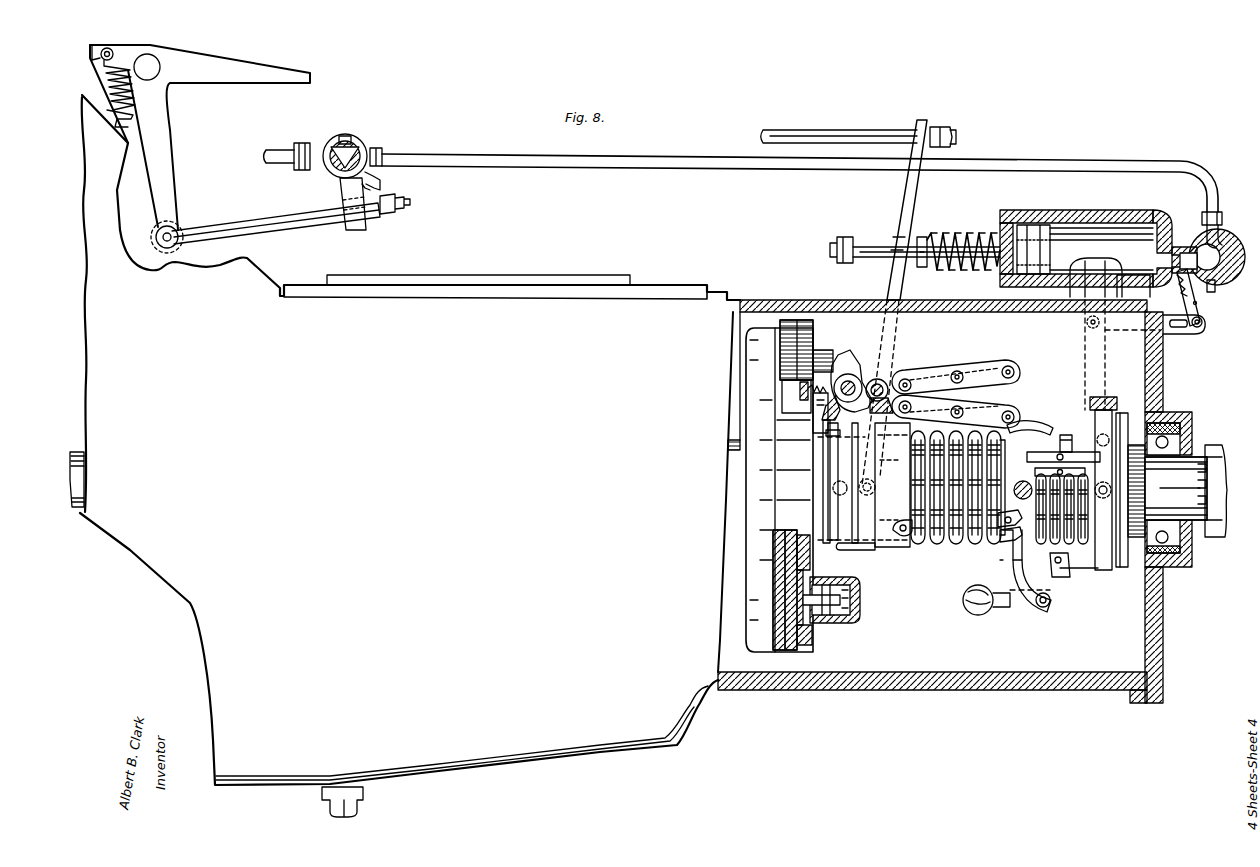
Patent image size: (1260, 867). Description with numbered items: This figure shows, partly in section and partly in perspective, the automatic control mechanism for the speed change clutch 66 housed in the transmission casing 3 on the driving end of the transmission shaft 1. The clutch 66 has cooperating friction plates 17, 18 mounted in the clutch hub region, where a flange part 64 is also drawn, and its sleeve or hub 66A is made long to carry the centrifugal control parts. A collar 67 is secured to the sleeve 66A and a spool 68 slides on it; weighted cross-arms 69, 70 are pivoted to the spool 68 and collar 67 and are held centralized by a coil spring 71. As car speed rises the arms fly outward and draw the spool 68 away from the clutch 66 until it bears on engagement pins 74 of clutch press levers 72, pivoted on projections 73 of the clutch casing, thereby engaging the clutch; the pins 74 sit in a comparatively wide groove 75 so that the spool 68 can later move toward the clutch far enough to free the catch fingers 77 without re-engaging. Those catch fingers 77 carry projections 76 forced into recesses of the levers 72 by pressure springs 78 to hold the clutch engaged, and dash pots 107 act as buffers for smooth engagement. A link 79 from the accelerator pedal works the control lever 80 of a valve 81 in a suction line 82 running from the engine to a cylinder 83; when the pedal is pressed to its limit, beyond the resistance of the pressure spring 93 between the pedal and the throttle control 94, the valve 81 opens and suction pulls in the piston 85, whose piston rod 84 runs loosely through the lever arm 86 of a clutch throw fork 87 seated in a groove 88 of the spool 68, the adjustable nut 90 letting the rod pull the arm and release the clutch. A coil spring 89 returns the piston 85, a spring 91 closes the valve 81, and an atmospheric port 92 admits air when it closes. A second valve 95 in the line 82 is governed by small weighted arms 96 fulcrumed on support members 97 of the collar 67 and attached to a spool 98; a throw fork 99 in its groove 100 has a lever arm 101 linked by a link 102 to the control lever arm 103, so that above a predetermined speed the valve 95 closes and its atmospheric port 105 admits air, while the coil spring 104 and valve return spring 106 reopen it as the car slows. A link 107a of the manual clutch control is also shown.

The transmission shaft 1 is at (78, 450).
The transmission casing 3 is at (398, 778).
The friction plate 17 is at (775, 640).
The friction plate 18 is at (792, 645).
The hub flange 64 is at (806, 645).
The speed change clutch 66 is at (752, 488).
The speed change clutch sleeve or hub 66A is at (1140, 570).
The collar 67 is at (1002, 540).
The spool 68 is at (915, 550).
The weighted cross-arm 69 is at (934, 408).
The weighted cross-arm 70 is at (985, 406).
The coil spring 71 is at (935, 548).
The clutch press lever 72 is at (884, 378).
The projection 73 is at (850, 370).
The engagement pin 74 is at (838, 496).
The groove 75 is at (852, 545).
The projection 76 is at (836, 440).
The catch finger 77 is at (790, 378).
The pressure spring 78 is at (804, 393).
The link 79 is at (290, 224).
The control lever 80 is at (360, 226).
The valve 81 is at (336, 138).
The suction line 82 is at (456, 156).
The cylinder 83 is at (1076, 210).
The piston rod 84 is at (876, 242).
The piston 85 is at (1040, 223).
The lever arm 86 is at (915, 218).
The clutch throw fork 87 is at (878, 450).
The groove 88 is at (887, 550).
The coil spring 89 is at (958, 240).
The adjustable nut 90 is at (843, 236).
The spring 91 is at (365, 184).
The atmospheric port 92 is at (346, 136).
The pressure spring 93 is at (104, 104).
The accelerator throttle control 94 is at (100, 64).
The valve 95 is at (1200, 240).
The centrifugal weighted arm 96 is at (1008, 605).
The support member 97 is at (1004, 570).
The spool 98 is at (1072, 566).
The throw fork 99 is at (1115, 405).
The groove 100 is at (1122, 560).
The lever arm 101 is at (1102, 368).
The link 102 is at (1182, 333).
The control lever arm 103 is at (1200, 305).
The coil spring 104 is at (1065, 430).
The atmospheric port 105 is at (1217, 287).
The valve return spring 106 is at (1203, 322).
The dash pot 107 is at (862, 614).
The link 107a is at (866, 133).